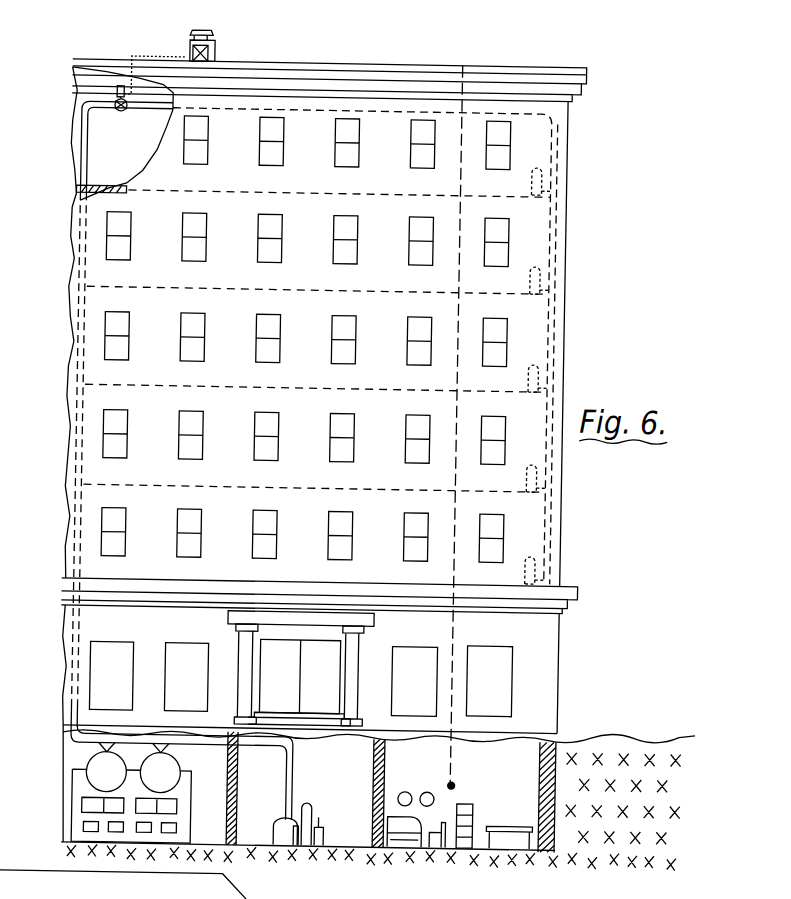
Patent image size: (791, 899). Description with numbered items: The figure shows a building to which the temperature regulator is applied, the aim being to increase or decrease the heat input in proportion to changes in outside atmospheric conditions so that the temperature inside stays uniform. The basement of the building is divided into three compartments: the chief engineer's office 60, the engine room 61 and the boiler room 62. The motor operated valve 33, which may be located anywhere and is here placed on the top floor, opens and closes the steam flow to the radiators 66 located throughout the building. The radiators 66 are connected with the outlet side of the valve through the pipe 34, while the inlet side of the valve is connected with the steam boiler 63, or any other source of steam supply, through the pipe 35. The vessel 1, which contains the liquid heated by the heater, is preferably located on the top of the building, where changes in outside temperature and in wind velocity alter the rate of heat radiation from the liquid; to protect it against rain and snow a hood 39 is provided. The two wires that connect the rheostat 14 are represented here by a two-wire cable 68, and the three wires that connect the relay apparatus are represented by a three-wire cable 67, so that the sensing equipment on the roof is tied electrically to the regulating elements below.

The hood 39 is at (215, 29).
The vessel 1 is at (208, 47).
The three-wire cable 67 is at (165, 60).
The motor operated valve 33 is at (118, 114).
The pipe 35 is at (78, 180).
The pipe 34 is at (232, 114).
The radiators 66 is at (528, 180).
The two-wire cable 68 is at (300, 60).
The rheostat 14 is at (462, 792).
The steam boiler 63 is at (103, 786).
The boiler room 62 is at (224, 788).
The engine room 61 is at (339, 793).
The chief engineer's office 60 is at (471, 796).